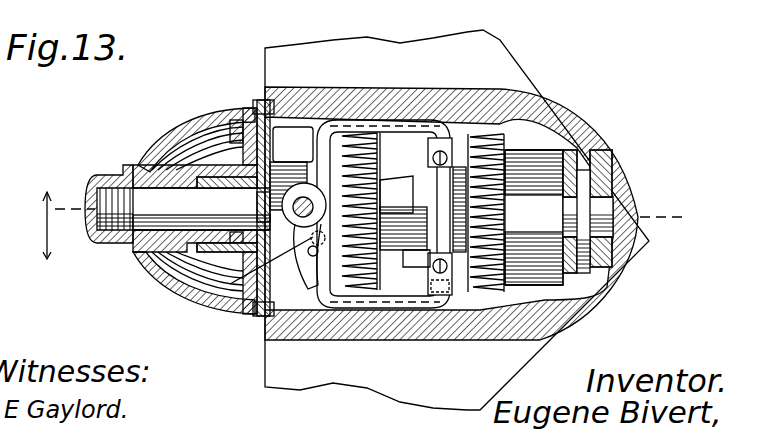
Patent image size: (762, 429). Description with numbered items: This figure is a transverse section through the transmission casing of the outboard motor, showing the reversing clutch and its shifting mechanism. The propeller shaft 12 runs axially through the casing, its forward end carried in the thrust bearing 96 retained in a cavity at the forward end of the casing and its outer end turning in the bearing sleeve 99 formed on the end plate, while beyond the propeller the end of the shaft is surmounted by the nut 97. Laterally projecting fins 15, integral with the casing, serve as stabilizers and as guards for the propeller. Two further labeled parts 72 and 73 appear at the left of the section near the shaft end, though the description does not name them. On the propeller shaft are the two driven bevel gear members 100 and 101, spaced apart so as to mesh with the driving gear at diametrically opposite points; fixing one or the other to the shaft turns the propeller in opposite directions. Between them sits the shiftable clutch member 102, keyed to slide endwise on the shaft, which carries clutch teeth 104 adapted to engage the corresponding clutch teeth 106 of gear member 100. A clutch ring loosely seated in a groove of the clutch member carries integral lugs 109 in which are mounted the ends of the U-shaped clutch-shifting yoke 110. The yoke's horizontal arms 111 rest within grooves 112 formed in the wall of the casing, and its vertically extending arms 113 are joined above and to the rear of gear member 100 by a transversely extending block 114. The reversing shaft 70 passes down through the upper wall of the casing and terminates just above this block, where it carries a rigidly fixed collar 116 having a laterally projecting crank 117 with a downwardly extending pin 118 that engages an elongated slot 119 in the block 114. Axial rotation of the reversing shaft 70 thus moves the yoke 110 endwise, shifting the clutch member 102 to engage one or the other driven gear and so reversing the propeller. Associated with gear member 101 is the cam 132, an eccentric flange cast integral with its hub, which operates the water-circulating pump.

The propeller shaft 12 is at (359, 225).
The fins 15 is at (347, 52).
The reversing shaft 70 is at (305, 191).
The shaft 72 is at (201, 208).
The housing 73 is at (146, 269).
The thrust bearing 96 is at (580, 177).
The nut 97 is at (108, 175).
The bearing sleeve 99 is at (205, 183).
The bevel gear member 100 is at (358, 268).
The bevel gear member 101 is at (492, 205).
The shiftable clutch member 102 is at (420, 253).
The clutch teeth 104 is at (377, 210).
The clutch teeth 106 is at (403, 184).
The lugs 109 is at (453, 137).
The clutch-shifting yoke 110 is at (381, 308).
The horizontal arms 111 is at (380, 122).
The grooves 112 is at (320, 120).
The vertically extending arms 113 is at (254, 112).
The block 114 is at (337, 133).
The collar 116 is at (288, 200).
The crank 117 is at (268, 204).
The pin 118 is at (227, 304).
The slot 119 is at (321, 250).
The cam 132 is at (533, 173).